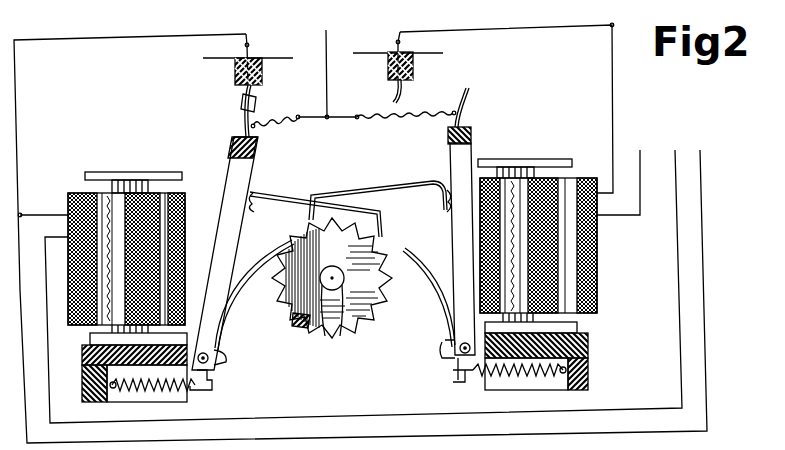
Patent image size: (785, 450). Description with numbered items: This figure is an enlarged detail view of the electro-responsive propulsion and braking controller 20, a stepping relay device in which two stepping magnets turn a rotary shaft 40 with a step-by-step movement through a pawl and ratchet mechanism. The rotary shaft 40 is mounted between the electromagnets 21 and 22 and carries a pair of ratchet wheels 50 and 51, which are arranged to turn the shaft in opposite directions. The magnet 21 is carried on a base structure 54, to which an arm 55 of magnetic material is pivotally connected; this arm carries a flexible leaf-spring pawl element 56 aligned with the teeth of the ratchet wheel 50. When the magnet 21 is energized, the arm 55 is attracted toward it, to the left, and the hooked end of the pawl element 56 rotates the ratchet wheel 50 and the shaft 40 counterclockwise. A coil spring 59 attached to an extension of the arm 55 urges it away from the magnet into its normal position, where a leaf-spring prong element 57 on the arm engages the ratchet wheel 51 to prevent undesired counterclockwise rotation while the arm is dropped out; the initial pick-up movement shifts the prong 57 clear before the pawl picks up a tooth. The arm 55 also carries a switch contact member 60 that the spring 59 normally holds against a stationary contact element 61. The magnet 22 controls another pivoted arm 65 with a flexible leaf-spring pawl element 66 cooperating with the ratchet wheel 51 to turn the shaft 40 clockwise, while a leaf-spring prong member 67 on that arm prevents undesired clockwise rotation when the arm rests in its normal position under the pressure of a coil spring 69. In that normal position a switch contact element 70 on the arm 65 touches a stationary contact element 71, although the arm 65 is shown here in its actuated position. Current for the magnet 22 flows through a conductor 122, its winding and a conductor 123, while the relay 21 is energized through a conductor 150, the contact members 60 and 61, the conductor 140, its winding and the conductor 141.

The electro-responsive propulsion and braking controller 20 is at (384, 336).
The stepping magnet 21 is at (183, 193).
The stepping magnet 22 is at (574, 187).
The rotary shaft 40 is at (338, 336).
The ratchet wheel 50 is at (389, 295).
The ratchet wheel 51 is at (292, 316).
The base structure 54 is at (98, 403).
The arm 55 is at (235, 192).
The flexible leaf-spring pawl element 56 is at (280, 192).
The leaf-spring prong element 57 is at (225, 330).
The coil spring 59 is at (183, 405).
The switch contact member 60 is at (240, 108).
The stationary contact element 61 is at (255, 95).
The arm 65 is at (467, 152).
The flexible leaf-spring pawl element 66 is at (400, 180).
The leaf-spring prong member 67 is at (432, 272).
The coil spring 69 is at (545, 400).
The switch contact element 70 is at (463, 100).
The stationary contact element 71 is at (393, 90).
The conductor 122 is at (557, 28).
The conductor 123 is at (648, 163).
The conductor 140 is at (60, 40).
The conductor 141 is at (275, 421).
The conductor 150 is at (328, 50).